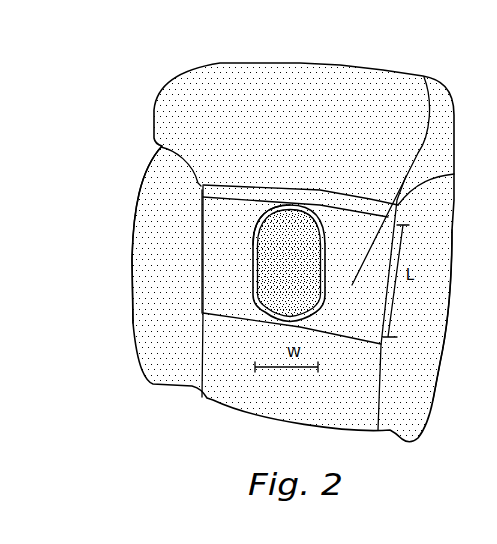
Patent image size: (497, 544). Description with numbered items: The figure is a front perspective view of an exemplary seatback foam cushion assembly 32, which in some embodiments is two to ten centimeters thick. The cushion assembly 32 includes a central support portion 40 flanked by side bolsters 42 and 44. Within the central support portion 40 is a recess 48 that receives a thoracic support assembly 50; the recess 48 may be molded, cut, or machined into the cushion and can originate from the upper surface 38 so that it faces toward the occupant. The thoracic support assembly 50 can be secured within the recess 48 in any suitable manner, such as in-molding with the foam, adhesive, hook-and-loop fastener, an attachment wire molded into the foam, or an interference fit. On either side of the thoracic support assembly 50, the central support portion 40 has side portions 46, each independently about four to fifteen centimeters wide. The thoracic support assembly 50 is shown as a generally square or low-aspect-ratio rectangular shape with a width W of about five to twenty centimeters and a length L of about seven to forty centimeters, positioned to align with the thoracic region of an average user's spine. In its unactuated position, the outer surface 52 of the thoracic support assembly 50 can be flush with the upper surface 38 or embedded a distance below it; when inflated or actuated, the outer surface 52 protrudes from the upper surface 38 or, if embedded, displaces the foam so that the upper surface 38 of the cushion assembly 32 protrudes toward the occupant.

The seatback foam cushion assembly 32 is at (152, 218).
The upper surface 38 is at (238, 211).
The central support portion 40 is at (221, 260).
The side bolster 42 is at (154, 278).
The side bolster 44 is at (419, 213).
The side portions 46 is at (424, 77).
The recess 48 is at (326, 242).
The thoracic support assembly 50 is at (281, 290).
The outer surface 52 is at (272, 228).